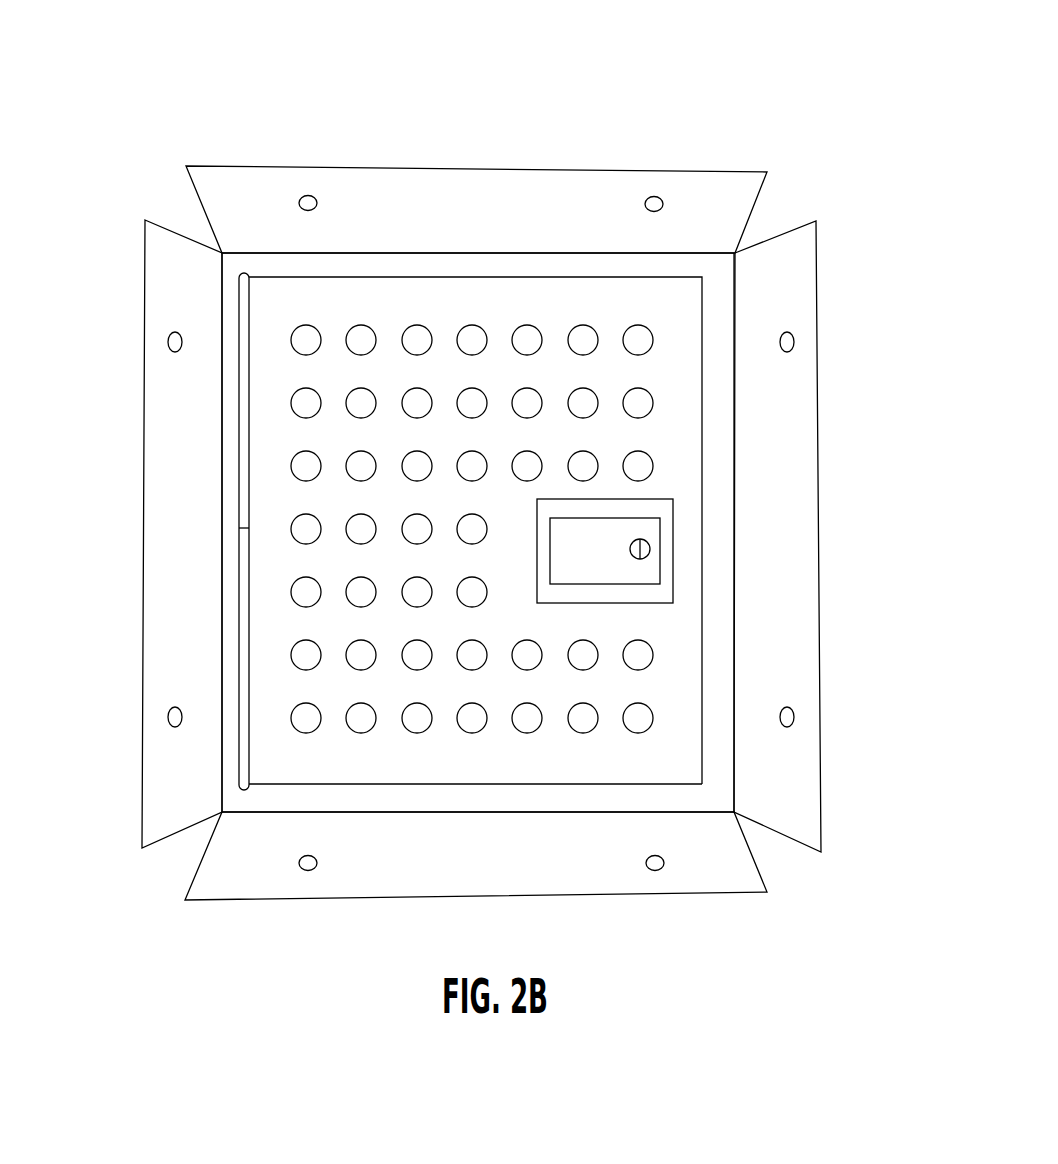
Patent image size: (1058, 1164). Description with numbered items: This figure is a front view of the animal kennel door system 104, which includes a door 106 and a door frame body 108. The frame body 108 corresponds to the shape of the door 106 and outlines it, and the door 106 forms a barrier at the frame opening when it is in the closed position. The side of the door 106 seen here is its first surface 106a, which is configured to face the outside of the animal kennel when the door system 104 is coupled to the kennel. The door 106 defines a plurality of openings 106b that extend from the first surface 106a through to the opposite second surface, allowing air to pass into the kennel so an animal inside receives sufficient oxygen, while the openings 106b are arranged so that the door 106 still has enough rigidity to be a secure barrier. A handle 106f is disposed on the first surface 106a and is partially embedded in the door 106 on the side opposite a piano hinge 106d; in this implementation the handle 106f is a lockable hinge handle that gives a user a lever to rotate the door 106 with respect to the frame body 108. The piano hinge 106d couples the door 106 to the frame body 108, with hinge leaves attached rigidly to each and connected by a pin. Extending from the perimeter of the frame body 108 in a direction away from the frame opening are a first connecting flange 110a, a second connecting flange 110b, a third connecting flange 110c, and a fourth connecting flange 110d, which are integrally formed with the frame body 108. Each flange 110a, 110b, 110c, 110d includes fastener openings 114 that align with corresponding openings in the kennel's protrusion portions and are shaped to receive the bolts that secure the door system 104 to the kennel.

The animal kennel door system 104 is at (676, 80).
The door 106 is at (474, 459).
The first surface 106a is at (438, 778).
The openings 106b is at (472, 326).
The piano hinge 106d is at (237, 772).
The handle 106f is at (615, 548).
The door frame body 108 is at (712, 767).
The first connecting flange 110a is at (522, 197).
The second connecting flange 110b is at (470, 873).
The third connecting flange 110c is at (177, 423).
The fourth connecting flange 110d is at (808, 536).
The fastener openings 114 is at (794, 341).